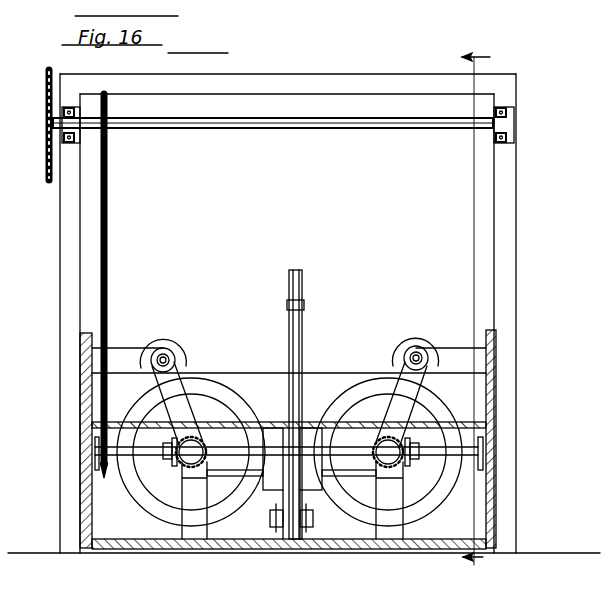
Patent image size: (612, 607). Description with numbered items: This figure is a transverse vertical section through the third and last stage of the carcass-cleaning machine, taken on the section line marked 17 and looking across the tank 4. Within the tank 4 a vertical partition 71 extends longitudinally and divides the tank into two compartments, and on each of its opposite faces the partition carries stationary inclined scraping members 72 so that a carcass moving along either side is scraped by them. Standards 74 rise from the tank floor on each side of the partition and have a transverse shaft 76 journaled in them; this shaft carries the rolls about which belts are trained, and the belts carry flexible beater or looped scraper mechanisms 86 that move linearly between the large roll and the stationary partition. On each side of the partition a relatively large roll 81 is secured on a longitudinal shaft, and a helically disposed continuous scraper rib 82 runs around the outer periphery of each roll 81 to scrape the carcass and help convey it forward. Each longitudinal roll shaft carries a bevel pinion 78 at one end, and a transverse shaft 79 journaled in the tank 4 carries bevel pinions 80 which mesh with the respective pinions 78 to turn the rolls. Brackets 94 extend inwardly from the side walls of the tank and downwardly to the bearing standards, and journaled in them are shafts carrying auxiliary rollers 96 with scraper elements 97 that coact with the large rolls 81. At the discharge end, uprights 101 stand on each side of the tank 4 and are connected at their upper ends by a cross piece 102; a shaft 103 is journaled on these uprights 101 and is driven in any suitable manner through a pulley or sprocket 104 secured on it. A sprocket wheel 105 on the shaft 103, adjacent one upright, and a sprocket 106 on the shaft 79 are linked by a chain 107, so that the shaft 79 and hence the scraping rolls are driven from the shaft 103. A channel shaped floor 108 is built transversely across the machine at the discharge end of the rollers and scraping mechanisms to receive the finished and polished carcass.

The tank 4 is at (497, 405).
The section line 17- 17 is at (490, 309).
The partition 71 is at (296, 268).
The stationary inclined scraping members 72 is at (293, 310).
The standards 74 is at (293, 500).
The transverse shaft 76 is at (291, 483).
The bevel pinion 78 is at (206, 449).
The shaft 79 is at (130, 434).
The bevel pinions 80 is at (176, 472).
The rolls 81 is at (289, 452).
The scraper rib 82 is at (245, 418).
The flexible beater or looped scraper mechanisms 86 is at (318, 528).
The brackets 94 is at (140, 347).
The roller 96 is at (170, 345).
The scraper elements 97 is at (186, 350).
The uprights 101 is at (60, 230).
The cross piece 102 is at (288, 83).
The shaft 103 is at (238, 128).
The pulley or sprocket 104 is at (47, 168).
The sprocket wheel 105 is at (110, 130).
The sprocket 106 is at (104, 480).
The chain 107 is at (104, 292).
The channel shaped floor 108 is at (303, 395).